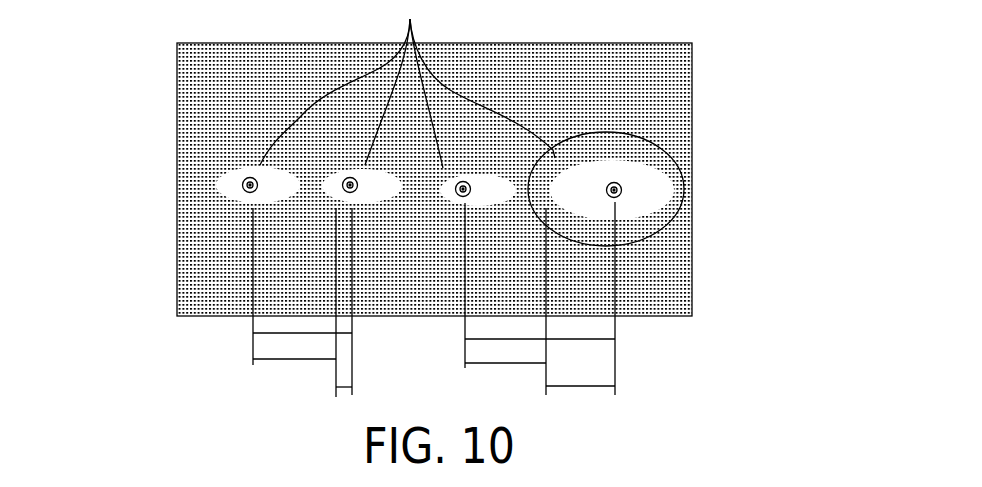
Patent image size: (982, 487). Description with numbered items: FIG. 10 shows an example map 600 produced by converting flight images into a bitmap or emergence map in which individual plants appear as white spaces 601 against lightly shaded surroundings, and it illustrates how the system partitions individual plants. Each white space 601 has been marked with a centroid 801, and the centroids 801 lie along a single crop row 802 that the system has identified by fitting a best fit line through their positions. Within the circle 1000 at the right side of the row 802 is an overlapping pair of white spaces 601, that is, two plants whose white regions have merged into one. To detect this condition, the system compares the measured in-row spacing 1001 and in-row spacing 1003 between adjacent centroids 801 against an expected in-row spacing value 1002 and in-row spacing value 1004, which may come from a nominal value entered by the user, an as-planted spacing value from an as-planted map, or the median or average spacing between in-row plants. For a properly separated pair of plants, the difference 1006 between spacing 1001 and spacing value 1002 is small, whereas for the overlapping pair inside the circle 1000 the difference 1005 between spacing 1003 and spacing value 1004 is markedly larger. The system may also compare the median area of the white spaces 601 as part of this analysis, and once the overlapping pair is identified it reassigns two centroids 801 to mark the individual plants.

The map 600 is at (421, 215).
The white spaces 601 is at (407, 84).
The centroid 801 is at (246, 191).
The row 802 is at (664, 71).
The circle 1000 is at (663, 232).
The in-row spacing 1001 is at (270, 333).
The in-row spacing value 1002 is at (275, 360).
The in-row spacing 1003 is at (595, 340).
The in-row spacing value 1004 is at (515, 365).
The difference 1005 is at (340, 388).
The difference 1006 is at (582, 387).